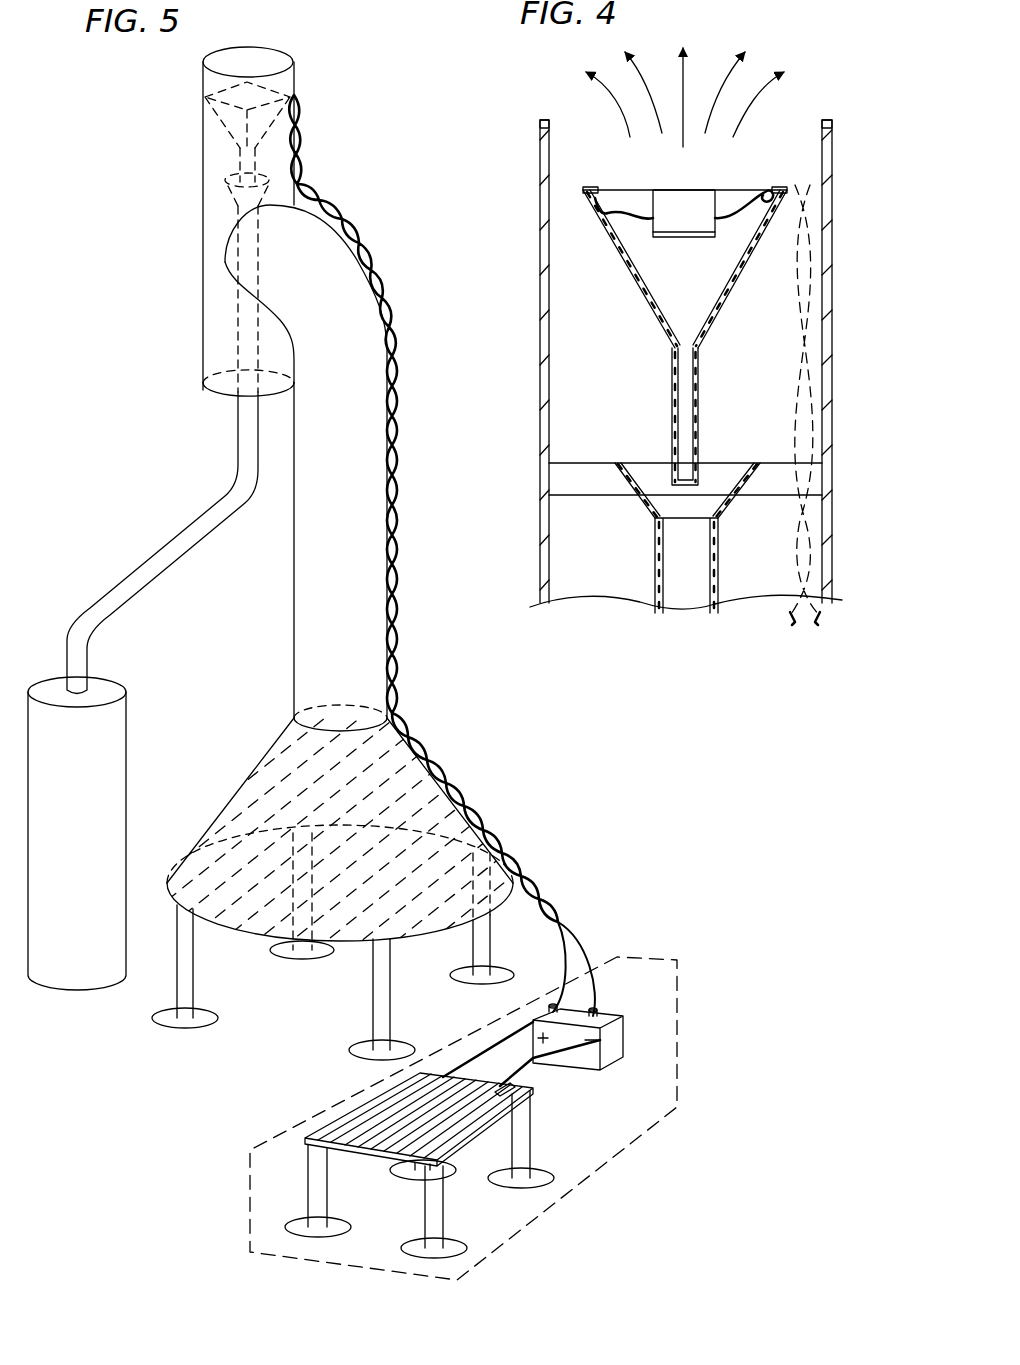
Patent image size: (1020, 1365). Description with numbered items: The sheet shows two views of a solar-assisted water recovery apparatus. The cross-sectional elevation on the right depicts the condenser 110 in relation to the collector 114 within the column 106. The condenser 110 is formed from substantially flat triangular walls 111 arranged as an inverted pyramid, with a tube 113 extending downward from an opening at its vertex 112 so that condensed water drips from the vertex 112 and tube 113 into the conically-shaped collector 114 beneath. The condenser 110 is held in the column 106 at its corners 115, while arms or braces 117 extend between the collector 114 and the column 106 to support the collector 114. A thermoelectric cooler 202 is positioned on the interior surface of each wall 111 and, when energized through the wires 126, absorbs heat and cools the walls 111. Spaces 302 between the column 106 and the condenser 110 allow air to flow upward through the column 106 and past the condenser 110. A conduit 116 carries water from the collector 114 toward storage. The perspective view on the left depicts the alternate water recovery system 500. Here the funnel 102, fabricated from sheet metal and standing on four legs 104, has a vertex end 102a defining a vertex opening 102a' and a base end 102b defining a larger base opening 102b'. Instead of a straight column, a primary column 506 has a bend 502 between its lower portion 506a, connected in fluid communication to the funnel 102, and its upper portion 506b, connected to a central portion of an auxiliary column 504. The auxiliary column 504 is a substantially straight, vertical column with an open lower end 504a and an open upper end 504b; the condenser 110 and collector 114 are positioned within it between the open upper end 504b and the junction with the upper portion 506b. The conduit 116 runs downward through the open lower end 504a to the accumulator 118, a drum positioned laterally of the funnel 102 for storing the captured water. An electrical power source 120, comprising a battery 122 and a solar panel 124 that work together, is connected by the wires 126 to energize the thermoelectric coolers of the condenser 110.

In FIG. 5, the funnel 102 is at (252, 772).
In FIG. 5, the vertex end 102a is at (307, 699).
In FIG. 5, the vertex opening 102a' is at (343, 669).
In FIG. 5, the base end 102b is at (450, 937).
In FIG. 5, the base opening 102b' is at (286, 921).
In FIG. 5, the legs 104 is at (484, 942).
In FIG. 4, the column 106 is at (832, 352).
In FIG. 4, the condenser 110 is at (636, 300).
In FIG. 5, the condenser 110 is at (208, 118).
In FIG. 4, the walls 111 is at (627, 267).
In FIG. 4, the vertex 112 is at (668, 355).
In FIG. 5, the vertex 112 is at (238, 152).
In FIG. 4, the tube 113 is at (672, 400).
In FIG. 5, the tube 113 is at (232, 172).
In FIG. 4, the collector 114 is at (650, 470).
In FIG. 5, the collector 114 is at (228, 196).
In FIG. 4, the corners 115 is at (587, 190).
In FIG. 4, the conduit 116 is at (655, 595).
In FIG. 5, the conduit 116 is at (236, 259).
In FIG. 4, the arms or braces 117 is at (578, 485).
In FIG. 5, the accumulator 118 is at (125, 716).
In FIG. 5, the electrical power source 120 is at (680, 978).
In FIG. 5, the battery 122 is at (615, 1058).
In FIG. 5, the solar panel 124 is at (537, 1090).
In FIG. 4, the wires 126 is at (792, 610).
In FIG. 5, the wires 126 is at (302, 130).
In FIG. 4, the thermoelectric cooler 202 is at (665, 205).
In FIG. 4, the spaces 302 is at (556, 197).
In FIG. 5, the water recovery system 500 is at (92, 126).
In FIG. 5, the bend 502 is at (345, 305).
In FIG. 5, the auxiliary column 504 is at (203, 333).
In FIG. 5, the open lower end 504a is at (220, 400).
In FIG. 5, the open upper end 504b is at (288, 50).
In FIG. 5, the primary column 506 is at (296, 546).
In FIG. 5, the lower portion 506a is at (398, 706).
In FIG. 5, the upper portion 506b is at (300, 190).